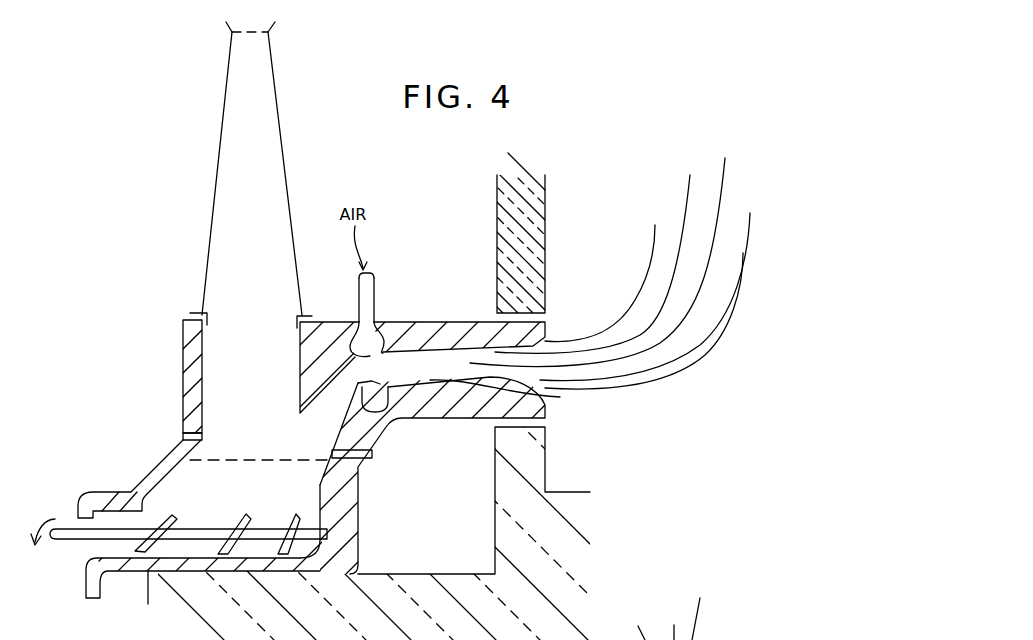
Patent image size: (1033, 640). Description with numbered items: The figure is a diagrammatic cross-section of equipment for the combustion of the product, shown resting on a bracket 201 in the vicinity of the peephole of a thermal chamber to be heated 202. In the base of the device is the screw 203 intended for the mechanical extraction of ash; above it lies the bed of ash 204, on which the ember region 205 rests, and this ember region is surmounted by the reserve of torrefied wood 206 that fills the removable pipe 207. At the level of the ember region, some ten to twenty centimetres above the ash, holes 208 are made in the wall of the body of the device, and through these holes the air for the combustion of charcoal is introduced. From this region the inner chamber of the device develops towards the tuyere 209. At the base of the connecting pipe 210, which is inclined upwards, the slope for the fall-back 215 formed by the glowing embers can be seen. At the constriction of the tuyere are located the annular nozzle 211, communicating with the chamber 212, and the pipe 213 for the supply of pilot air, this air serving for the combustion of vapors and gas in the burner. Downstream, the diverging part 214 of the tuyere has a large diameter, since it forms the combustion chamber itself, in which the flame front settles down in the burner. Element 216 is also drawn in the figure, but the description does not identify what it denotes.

The bracket 201 is at (163, 602).
The thermal chamber to be heated 202 is at (618, 255).
The screw 203 is at (173, 520).
The bed of ash 204 is at (183, 438).
The ember region 205 is at (258, 433).
The reserve of torrefied wood 206 is at (245, 248).
The removable pipe 207 is at (218, 156).
The holes 208 is at (185, 440).
The tuyere 209 is at (447, 378).
The connecting pipe 210 is at (343, 375).
The annular nozzle 211 is at (391, 352).
The chamber 212 is at (371, 342).
The pipe for the supply of pilot air 213 is at (370, 275).
The diverging part 214 is at (540, 370).
The slope for the fall-back 215 is at (318, 430).
The lower body nose 216 is at (463, 352).